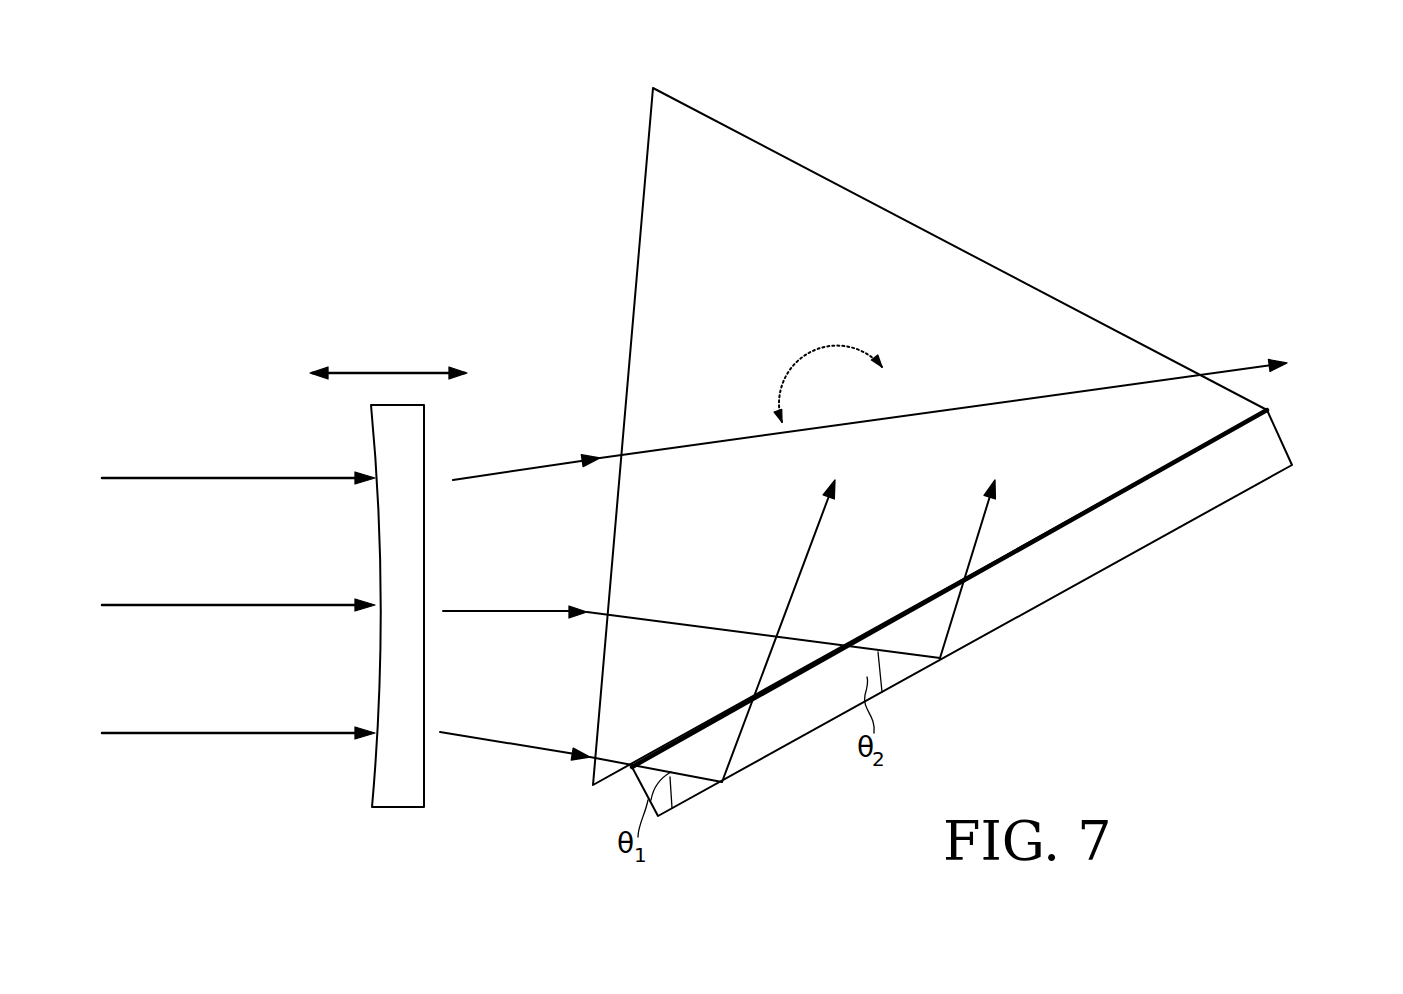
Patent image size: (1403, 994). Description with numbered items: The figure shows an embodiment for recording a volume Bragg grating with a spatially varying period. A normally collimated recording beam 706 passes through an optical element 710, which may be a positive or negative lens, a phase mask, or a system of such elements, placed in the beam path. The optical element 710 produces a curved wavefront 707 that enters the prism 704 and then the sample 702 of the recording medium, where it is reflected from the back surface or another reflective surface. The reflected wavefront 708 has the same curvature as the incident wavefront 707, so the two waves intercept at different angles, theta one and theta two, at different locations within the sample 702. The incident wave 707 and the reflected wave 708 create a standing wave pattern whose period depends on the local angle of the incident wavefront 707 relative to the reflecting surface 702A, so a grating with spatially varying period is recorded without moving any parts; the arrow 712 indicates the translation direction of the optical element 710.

The sample of the recording medium 702 is at (1258, 447).
The reflecting surface 702A is at (1135, 553).
The prism 704 is at (890, 307).
The recording beam 706 is at (223, 448).
The curved wavefront 707 is at (520, 747).
The reflected wavefront 708 is at (936, 470).
The optical element 710 is at (398, 807).
The lens translation direction 712 is at (380, 373).